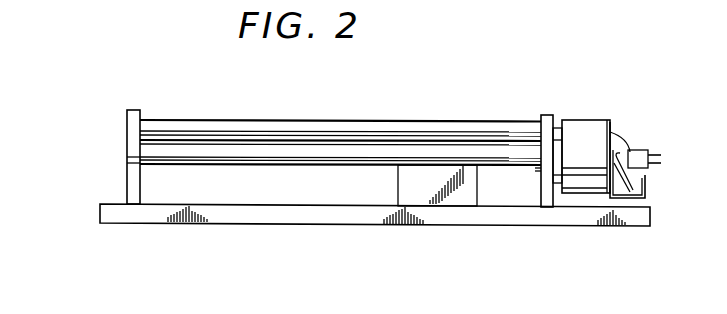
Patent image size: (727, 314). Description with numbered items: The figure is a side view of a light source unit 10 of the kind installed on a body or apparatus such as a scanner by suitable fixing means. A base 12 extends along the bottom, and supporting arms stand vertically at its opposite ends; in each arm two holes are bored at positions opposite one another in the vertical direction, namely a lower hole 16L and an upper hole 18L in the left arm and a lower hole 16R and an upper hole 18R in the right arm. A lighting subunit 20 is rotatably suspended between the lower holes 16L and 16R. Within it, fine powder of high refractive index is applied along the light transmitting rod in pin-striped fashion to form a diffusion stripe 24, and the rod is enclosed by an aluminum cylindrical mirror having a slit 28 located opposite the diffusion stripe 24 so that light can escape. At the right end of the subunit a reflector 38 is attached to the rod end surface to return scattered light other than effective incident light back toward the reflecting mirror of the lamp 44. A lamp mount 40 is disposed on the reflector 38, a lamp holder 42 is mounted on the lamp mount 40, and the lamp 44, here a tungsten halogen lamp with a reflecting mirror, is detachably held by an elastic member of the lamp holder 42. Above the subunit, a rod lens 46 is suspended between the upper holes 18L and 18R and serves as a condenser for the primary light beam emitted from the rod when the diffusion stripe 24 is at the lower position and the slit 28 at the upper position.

The light source unit 10 is at (294, 114).
The base 12 is at (317, 214).
The hole 16L is at (127, 160).
The hole 16R is at (545, 176).
The hole 18L is at (127, 122).
The hole 18R is at (547, 132).
The lighting subunit 20 is at (201, 152).
The diffusion stripe 24 is at (277, 156).
The slit 28 is at (347, 143).
The reflector 38 is at (558, 208).
The lamp mount 40 is at (585, 137).
The lamp holder 42 is at (637, 203).
The lamp 44 is at (624, 148).
The rod lens 46 is at (213, 124).